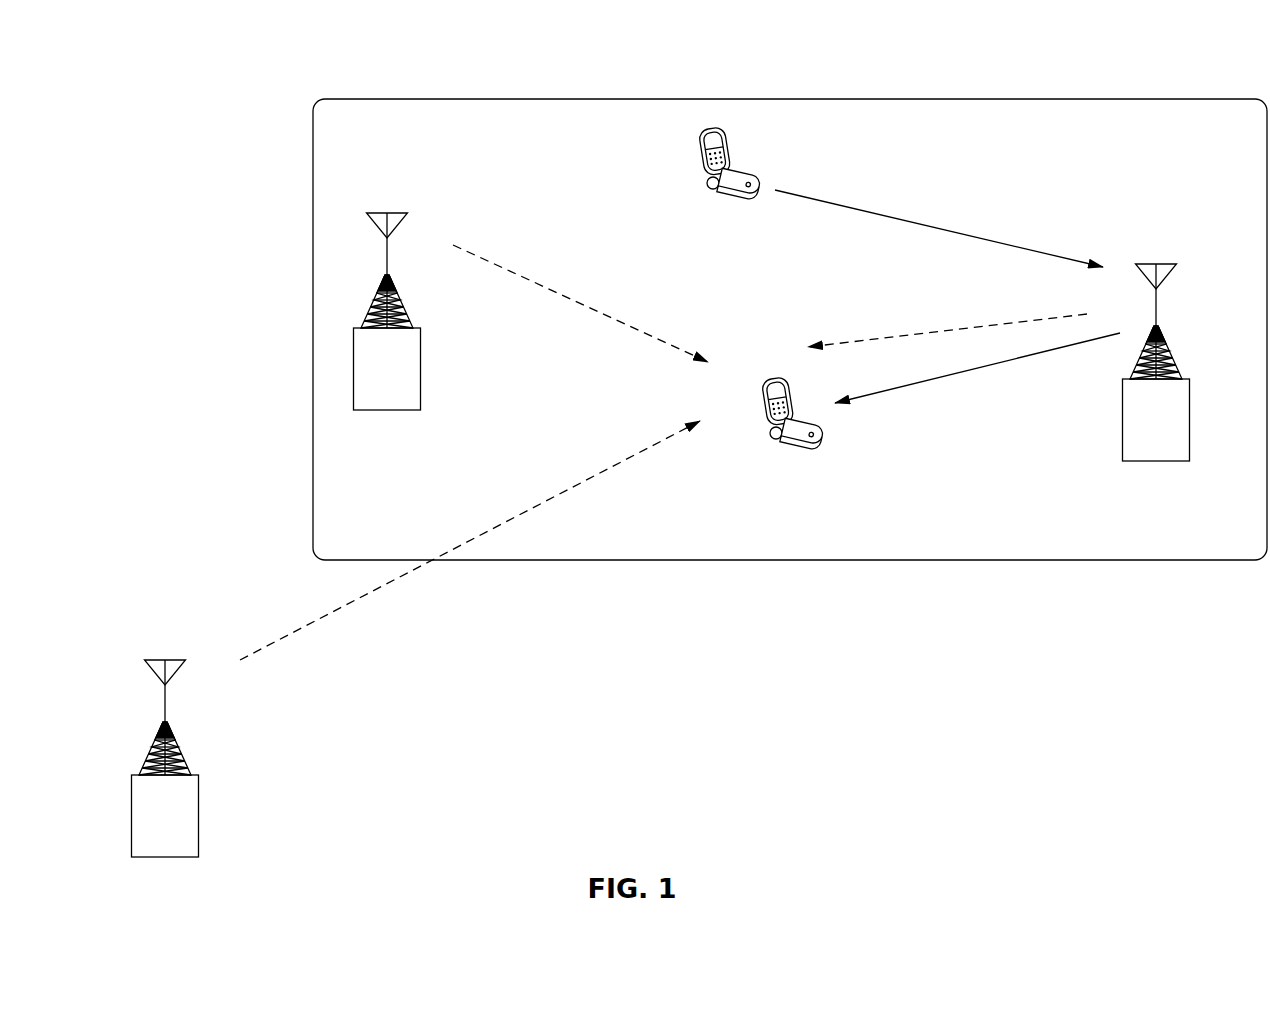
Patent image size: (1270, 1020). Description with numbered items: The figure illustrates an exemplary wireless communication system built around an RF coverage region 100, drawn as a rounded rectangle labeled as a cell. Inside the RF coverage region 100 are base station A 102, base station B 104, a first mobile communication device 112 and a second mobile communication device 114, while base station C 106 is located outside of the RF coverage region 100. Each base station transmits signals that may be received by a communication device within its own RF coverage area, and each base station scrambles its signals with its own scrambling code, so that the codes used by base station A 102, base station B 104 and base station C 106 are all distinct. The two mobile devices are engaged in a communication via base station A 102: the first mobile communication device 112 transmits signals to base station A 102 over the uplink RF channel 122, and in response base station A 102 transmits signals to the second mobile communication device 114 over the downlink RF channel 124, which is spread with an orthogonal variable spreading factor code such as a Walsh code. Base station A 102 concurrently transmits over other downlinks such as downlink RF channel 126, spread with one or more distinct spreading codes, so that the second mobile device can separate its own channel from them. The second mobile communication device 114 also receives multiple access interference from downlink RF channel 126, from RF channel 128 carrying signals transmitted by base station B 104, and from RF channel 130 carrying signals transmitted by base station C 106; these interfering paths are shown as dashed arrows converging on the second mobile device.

The RF coverage region 100 is at (1201, 58).
The base station A 102 is at (1190, 409).
The base station B 104 is at (421, 358).
The base station C 106 is at (224, 812).
The mobile communication device MU_1 112 is at (698, 143).
The mobile communication device MU_2 114 is at (762, 393).
The uplink RF channel 122 is at (939, 228).
The downlink RF channel 124 is at (977, 373).
The downlink RF channel 126 is at (947, 324).
The RF channel 128 is at (580, 303).
The RF channel 130 is at (470, 540).